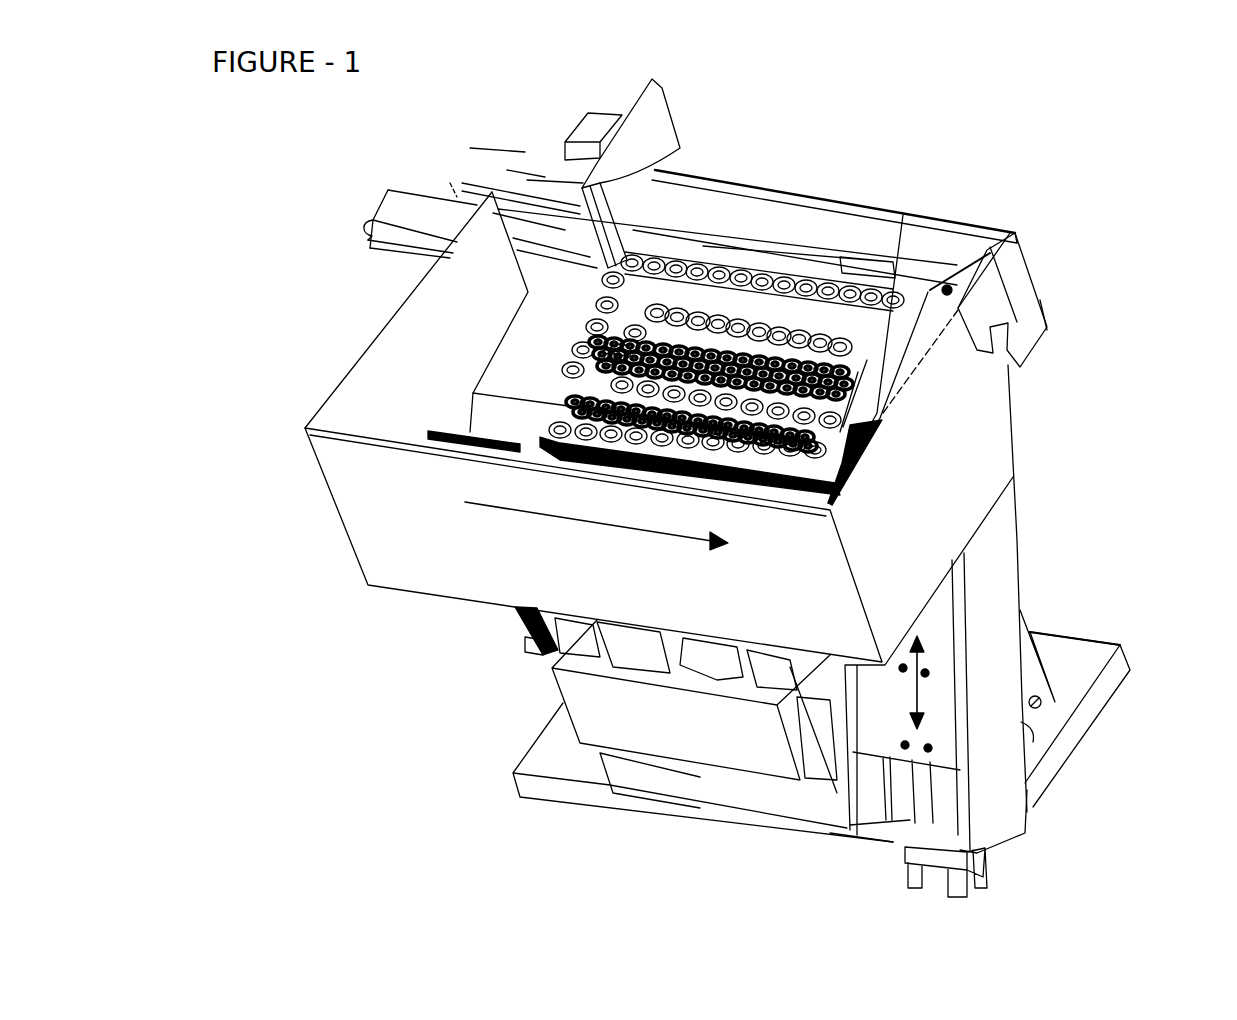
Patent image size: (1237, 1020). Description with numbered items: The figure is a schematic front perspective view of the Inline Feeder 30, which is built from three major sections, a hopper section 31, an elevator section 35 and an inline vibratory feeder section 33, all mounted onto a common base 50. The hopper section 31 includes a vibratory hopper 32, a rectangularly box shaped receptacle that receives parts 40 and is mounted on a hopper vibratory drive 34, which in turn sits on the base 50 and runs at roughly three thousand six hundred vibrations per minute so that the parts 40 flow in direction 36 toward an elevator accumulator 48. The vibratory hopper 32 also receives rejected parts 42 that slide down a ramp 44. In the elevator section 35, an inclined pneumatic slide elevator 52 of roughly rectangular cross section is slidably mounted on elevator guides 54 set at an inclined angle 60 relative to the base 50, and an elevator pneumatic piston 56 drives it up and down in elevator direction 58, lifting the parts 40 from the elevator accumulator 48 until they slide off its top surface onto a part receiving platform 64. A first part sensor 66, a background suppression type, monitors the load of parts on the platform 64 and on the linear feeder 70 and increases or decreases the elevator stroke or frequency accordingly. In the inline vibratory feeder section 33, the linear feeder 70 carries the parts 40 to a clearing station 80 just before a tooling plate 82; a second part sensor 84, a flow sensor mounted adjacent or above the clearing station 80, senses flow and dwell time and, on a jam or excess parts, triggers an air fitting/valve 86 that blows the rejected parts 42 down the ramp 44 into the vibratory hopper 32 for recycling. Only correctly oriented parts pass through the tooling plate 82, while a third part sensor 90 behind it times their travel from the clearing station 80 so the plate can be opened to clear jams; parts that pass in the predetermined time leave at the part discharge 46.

The Inline Feeder 30 is at (317, 695).
The hopper section 31 is at (247, 592).
The vibratory hopper 32 is at (352, 485).
The inline vibratory feeder section 33 is at (1067, 130).
The hopper vibratory drive 34 is at (605, 717).
The elevator section 35 is at (1100, 472).
The direction of part flow 36 is at (598, 528).
The parts 40 is at (782, 500).
The rejected parts 42 is at (613, 303).
The ramp 44 is at (515, 366).
The part discharge 46 is at (362, 225).
The elevator accumulator 48 is at (947, 288).
The base 50 is at (1107, 688).
The inclined pneumatic slide elevator 52 is at (933, 612).
The elevator guides 54 is at (1020, 807).
The elevator pneumatic piston 56 is at (937, 822).
The elevator direction 58 is at (918, 700).
The inclined angle 60 is at (1043, 680).
The part receiving platform 64 is at (903, 215).
The first part sensor 66 is at (1020, 243).
The linear feeder 70 is at (752, 253).
The clearing station 80 is at (638, 272).
The tooling plate 82 is at (583, 245).
The second part sensor 84 is at (681, 148).
The air fitting/valve 86 is at (613, 270).
The third part sensor 90 is at (560, 247).